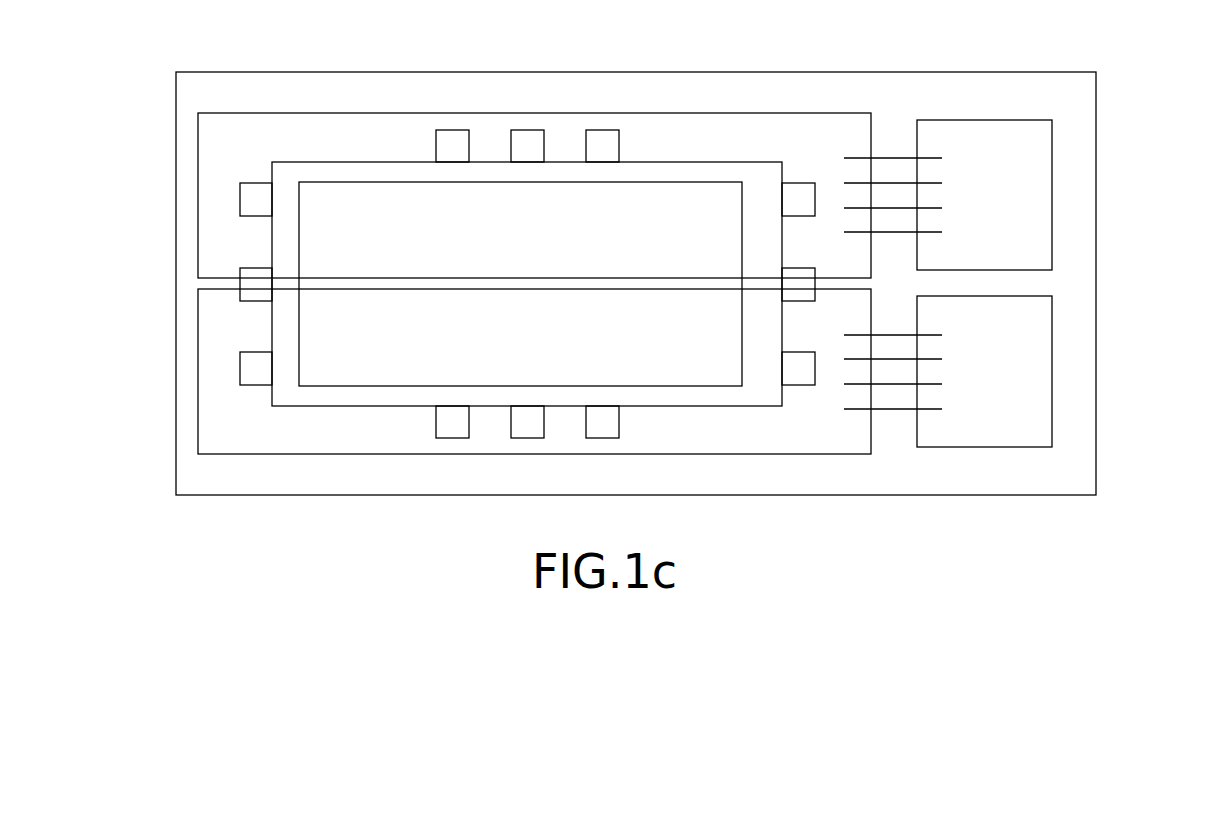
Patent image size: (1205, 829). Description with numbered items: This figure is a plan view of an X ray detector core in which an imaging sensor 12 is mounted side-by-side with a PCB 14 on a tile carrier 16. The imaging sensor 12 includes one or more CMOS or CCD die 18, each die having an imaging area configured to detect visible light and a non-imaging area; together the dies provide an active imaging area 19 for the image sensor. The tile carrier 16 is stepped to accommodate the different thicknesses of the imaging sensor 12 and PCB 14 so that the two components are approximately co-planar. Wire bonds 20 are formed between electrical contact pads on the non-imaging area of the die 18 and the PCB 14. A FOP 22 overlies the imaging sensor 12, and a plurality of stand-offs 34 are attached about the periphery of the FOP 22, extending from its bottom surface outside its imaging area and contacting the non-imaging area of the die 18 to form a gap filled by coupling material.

The imaging sensor 12 is at (176, 183).
The PCB 14 is at (1052, 140).
The tile carrier 16 is at (1096, 462).
The CMOS or CCD die 18 is at (852, 113).
The active imaging area 19 is at (541, 311).
The wire bonds 20 is at (895, 158).
The FOP 22 is at (721, 162).
The stand-offs 34 is at (446, 130).